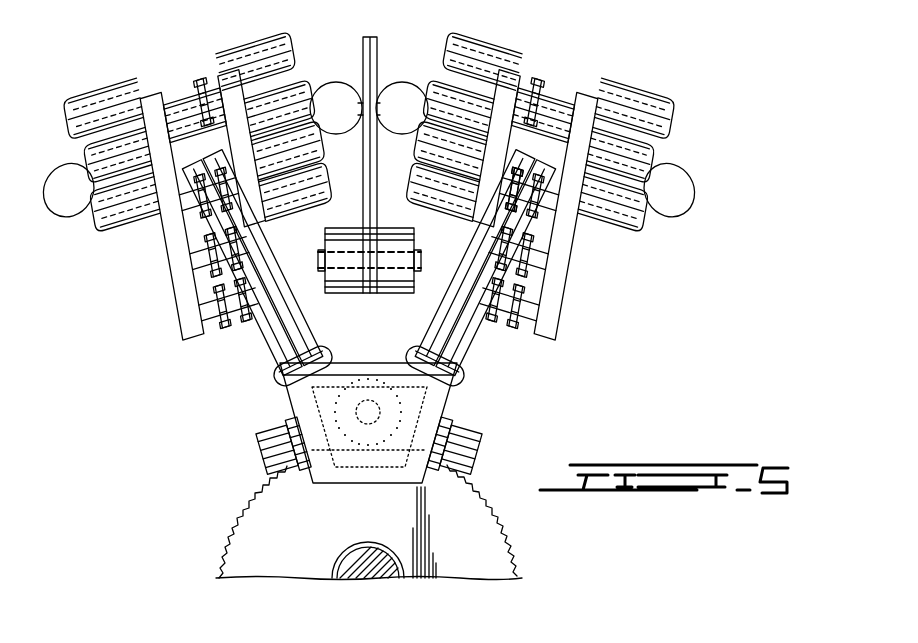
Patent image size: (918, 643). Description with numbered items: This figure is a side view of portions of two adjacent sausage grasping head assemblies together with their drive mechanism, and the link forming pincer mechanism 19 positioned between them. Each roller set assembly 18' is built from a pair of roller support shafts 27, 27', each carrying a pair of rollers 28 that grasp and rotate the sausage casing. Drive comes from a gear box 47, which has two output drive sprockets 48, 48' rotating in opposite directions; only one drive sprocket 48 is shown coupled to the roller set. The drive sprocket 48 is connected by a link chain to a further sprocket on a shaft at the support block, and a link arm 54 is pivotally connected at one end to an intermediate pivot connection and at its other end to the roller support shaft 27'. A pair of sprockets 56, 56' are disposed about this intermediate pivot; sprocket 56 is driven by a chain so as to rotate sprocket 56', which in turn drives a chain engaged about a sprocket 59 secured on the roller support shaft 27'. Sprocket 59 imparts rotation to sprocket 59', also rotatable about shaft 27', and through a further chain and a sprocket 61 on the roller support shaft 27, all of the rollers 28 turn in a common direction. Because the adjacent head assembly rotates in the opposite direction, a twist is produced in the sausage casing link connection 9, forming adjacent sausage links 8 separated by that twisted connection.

The set of rotatable support rollers 18' is at (189, 209).
The sausage links 8 is at (327, 97).
The sausage casing link connection 9 is at (358, 95).
The link forming pincer mechanism 19 is at (362, 163).
The rollers 28 is at (486, 57).
The sprocket 61 is at (548, 86).
The roller support shaft 27 is at (587, 93).
The roller support shaft 27' is at (544, 203).
The sprocket 59 is at (587, 249).
The sprocket 59' is at (471, 209).
The link arm 54 is at (551, 291).
The sprocket 56 is at (496, 279).
The sprocket 56' is at (482, 268).
The drive sprocket 48 is at (485, 448).
The drive sprocket 48' is at (248, 448).
The gear box 47 is at (370, 461).